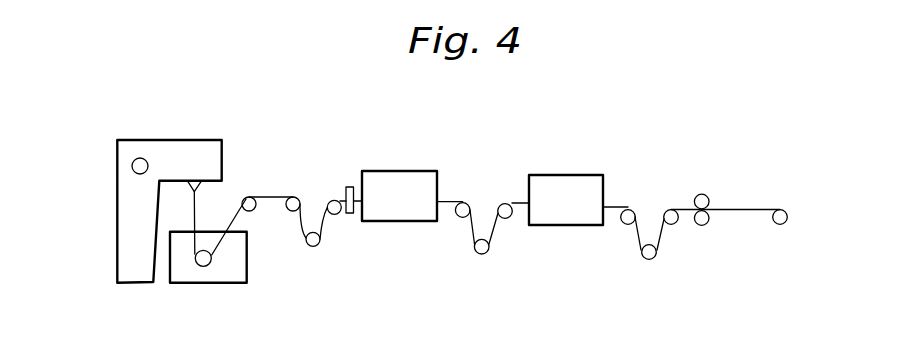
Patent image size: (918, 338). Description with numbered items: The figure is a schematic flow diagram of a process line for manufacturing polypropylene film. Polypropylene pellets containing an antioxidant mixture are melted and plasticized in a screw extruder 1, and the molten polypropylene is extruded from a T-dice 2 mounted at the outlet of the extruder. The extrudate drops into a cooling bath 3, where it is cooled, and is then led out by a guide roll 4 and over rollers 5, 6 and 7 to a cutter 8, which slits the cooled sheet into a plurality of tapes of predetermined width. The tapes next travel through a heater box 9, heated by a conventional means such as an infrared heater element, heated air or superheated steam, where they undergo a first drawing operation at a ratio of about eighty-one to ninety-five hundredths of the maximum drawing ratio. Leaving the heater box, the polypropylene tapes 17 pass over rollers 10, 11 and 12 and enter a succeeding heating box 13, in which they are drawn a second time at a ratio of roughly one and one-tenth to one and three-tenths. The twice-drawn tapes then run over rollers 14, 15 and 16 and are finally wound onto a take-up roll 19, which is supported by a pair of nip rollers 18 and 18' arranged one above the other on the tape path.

The screw extruder 1 is at (140, 158).
The T-dice 2 is at (199, 188).
The cooling bath 3 is at (221, 273).
The guide roll 4 is at (252, 194).
The roller 5 is at (289, 212).
The roller 6 is at (318, 246).
The roller 7 is at (334, 200).
The cutter 8 is at (350, 187).
The heater box 9 is at (410, 177).
The roller 10 is at (465, 203).
The roller 11 is at (486, 253).
The roller 12 is at (509, 203).
The heating box 13 is at (570, 177).
The roller 14 is at (631, 209).
The roller 15 is at (652, 258).
The roller 16 is at (672, 209).
The polypropylene tapes 17 is at (687, 209).
The nip roller 18 is at (721, 181).
The nip roller 18' is at (728, 236).
The take-up roll 19 is at (783, 210).